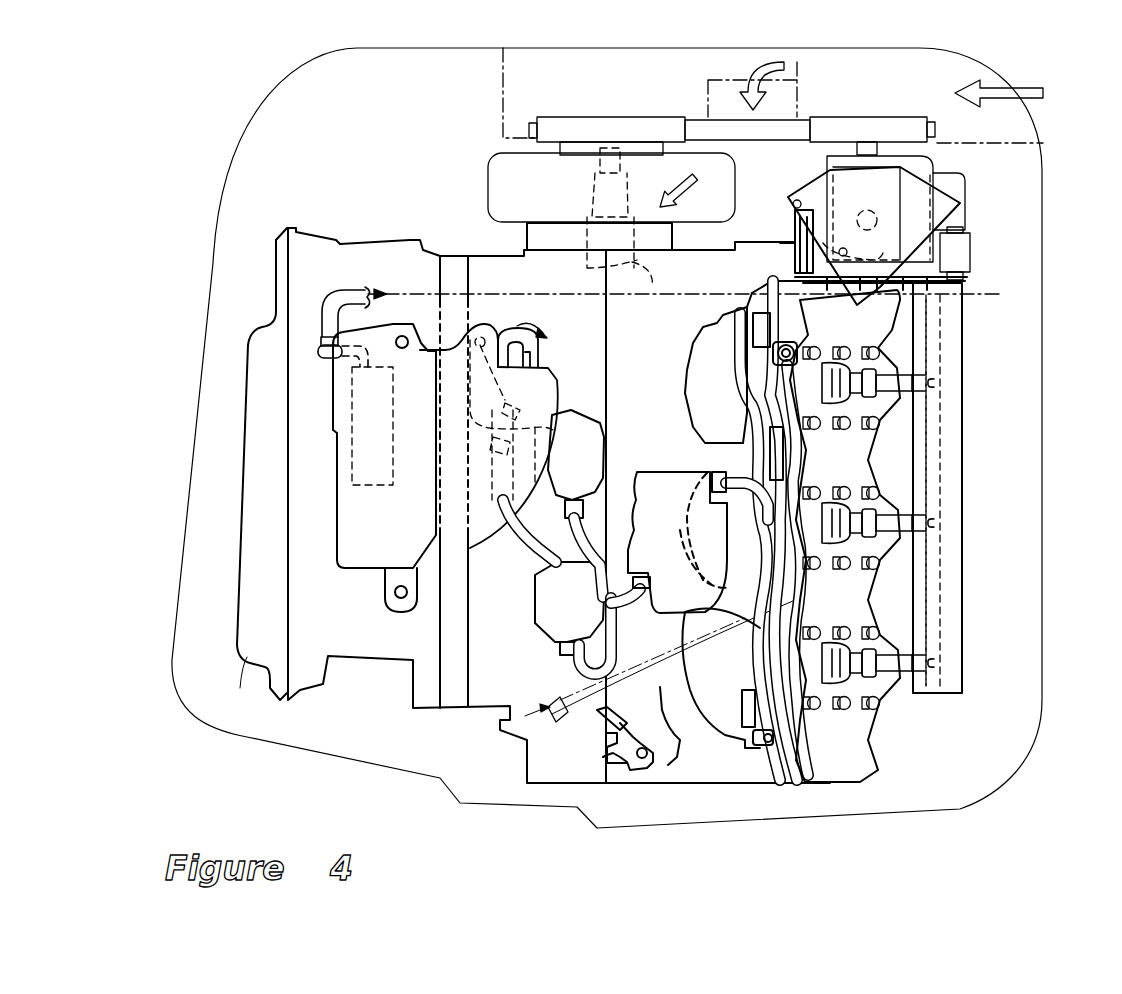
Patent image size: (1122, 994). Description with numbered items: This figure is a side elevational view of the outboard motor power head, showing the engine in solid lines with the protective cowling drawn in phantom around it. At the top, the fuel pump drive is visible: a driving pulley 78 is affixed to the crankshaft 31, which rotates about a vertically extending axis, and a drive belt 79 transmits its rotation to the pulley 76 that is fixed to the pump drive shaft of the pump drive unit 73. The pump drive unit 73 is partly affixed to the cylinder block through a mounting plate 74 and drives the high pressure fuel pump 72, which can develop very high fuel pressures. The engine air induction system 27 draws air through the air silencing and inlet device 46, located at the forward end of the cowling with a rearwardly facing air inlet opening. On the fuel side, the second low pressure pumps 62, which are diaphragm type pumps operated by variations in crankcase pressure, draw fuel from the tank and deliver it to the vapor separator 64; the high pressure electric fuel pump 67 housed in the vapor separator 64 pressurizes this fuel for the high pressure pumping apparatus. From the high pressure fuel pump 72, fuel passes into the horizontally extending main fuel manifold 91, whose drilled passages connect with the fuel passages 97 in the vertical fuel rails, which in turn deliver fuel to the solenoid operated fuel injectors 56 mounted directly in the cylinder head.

The engine air induction system 27 is at (390, 222).
The driving pulley 78 is at (558, 127).
The pulley 76 is at (877, 127).
The drive belt 79 is at (749, 128).
The high pressure fuel pump 72 is at (923, 165).
The pump drive unit 73 is at (957, 187).
The mounting plate 74 is at (947, 207).
The crankshaft 31 is at (648, 285).
The second low pressure pumps 62 is at (568, 422).
The high pressure electric fuel pump 67 is at (352, 458).
The vapor separator 64 is at (365, 572).
The air silencing and inlet device 46 is at (237, 687).
The fuel injectors 56 is at (885, 395).
The fuel passages 97 is at (933, 460).
The main fuel manifold 91 is at (950, 687).